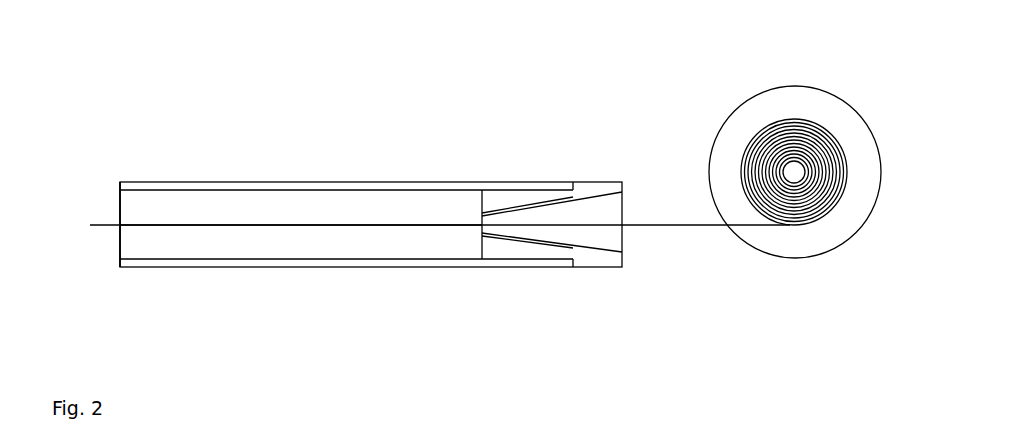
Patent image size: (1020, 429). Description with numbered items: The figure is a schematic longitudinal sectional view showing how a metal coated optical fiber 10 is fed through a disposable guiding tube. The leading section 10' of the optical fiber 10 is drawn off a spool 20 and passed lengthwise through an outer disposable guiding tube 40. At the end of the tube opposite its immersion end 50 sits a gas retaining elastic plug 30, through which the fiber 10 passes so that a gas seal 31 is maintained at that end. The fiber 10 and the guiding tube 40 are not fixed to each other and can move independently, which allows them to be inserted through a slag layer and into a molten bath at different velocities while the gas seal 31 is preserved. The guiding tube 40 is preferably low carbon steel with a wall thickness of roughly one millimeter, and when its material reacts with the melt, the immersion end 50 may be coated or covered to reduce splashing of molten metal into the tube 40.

The metal coated optical fiber 10 is at (440, 167).
The leading section of the metal coated optical fiber 10' is at (301, 162).
The spool 20 is at (782, 102).
The gas retaining elastic plug 30 is at (587, 258).
The gas seal 31 is at (486, 212).
The outer disposable guiding tube 40 is at (308, 182).
The immersion end 50 is at (121, 182).